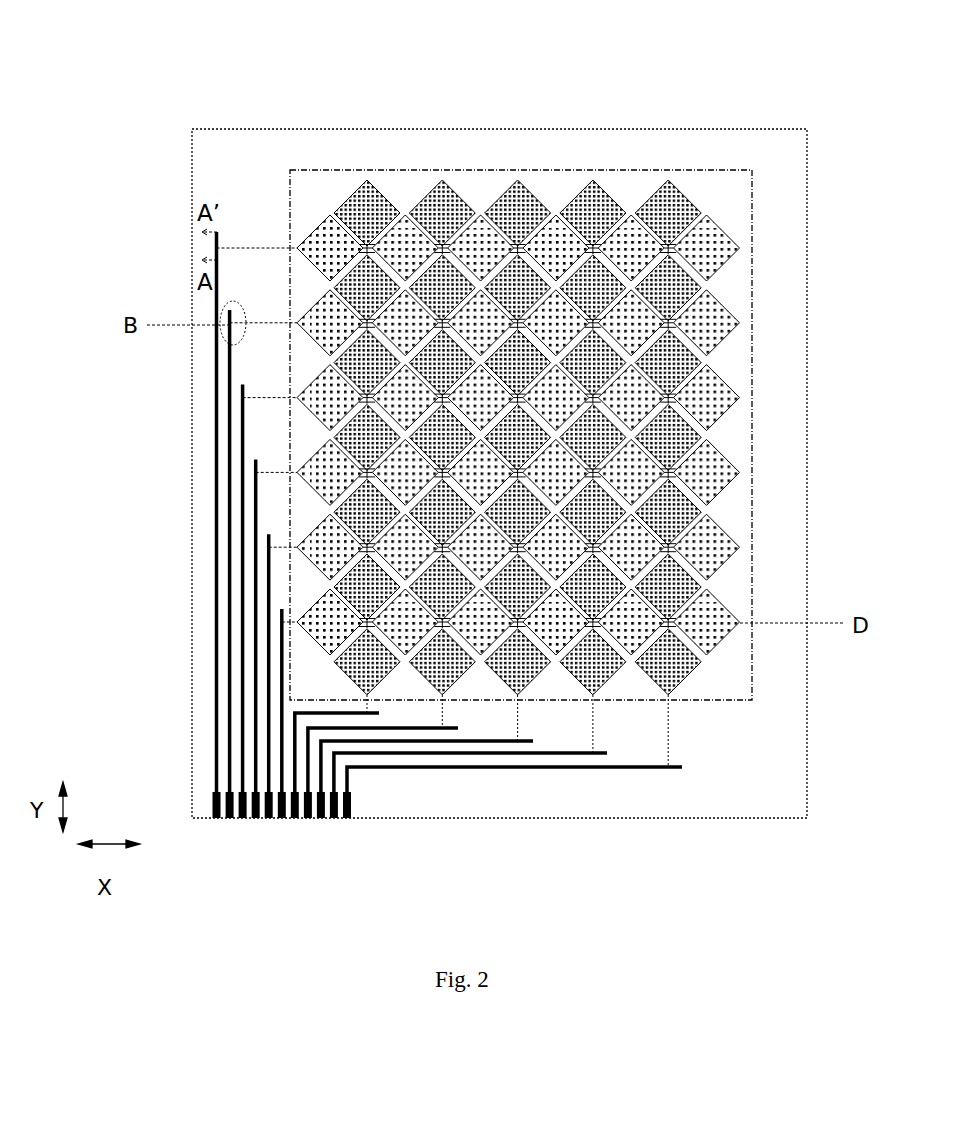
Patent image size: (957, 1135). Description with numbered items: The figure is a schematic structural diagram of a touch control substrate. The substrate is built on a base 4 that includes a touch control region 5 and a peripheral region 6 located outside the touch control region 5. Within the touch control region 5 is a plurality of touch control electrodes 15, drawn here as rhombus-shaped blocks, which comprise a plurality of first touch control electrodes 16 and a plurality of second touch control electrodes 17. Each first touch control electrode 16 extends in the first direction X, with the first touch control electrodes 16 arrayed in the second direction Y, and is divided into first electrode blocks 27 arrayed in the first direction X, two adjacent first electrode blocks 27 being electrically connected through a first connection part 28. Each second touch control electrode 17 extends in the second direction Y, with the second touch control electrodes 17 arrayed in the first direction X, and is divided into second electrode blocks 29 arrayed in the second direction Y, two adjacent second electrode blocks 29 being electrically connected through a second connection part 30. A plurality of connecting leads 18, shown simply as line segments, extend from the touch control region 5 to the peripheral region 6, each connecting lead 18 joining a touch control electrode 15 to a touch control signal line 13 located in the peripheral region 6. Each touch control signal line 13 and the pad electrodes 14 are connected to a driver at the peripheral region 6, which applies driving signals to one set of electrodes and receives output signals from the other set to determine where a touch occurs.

The base 4 is at (807, 257).
The touch control region 5 is at (627, 180).
The peripheral region 6 is at (720, 155).
The touch control signal line 13 is at (217, 308).
The pad electrode 14 is at (220, 818).
The touch control electrode 15 is at (602, 65).
The first touch control electrode 16 is at (518, 417).
The second touch control electrode 17 is at (366, 390).
The connecting lead 18 is at (259, 247).
The first electrode block 27 is at (553, 215).
The first connection part 28 is at (460, 195).
The second electrode block 29 is at (343, 200).
The second connection part 30 is at (381, 200).